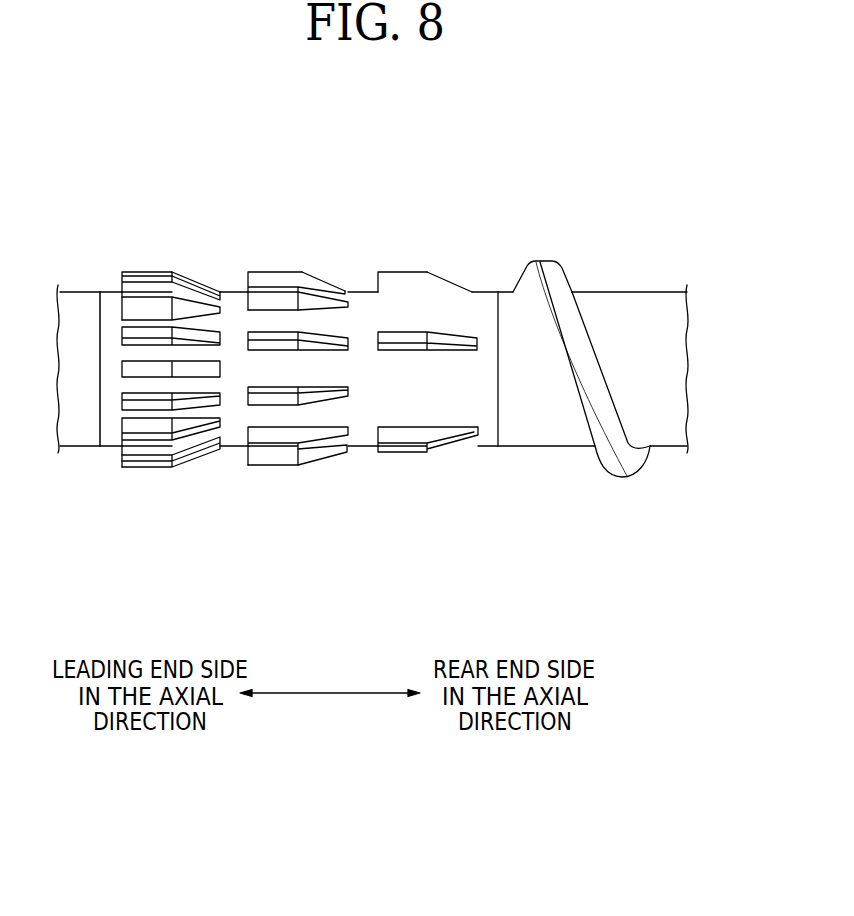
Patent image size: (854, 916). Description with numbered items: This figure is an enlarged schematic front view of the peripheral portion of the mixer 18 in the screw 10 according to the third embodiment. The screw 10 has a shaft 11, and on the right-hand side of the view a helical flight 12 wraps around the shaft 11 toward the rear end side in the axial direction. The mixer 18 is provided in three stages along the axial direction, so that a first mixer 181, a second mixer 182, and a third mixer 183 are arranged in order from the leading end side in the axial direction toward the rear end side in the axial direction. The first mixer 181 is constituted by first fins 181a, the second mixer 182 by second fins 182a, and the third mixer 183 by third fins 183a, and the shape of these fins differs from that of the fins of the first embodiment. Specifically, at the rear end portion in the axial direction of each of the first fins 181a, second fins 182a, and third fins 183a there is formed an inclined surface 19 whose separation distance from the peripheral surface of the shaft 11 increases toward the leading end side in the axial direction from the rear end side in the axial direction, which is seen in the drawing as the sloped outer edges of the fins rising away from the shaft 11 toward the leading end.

The screw 10 is at (183, 150).
The shaft 11 is at (623, 291).
The flight 12 is at (542, 260).
The mixer 18 is at (282, 393).
The first mixer 181 is at (151, 378).
The second mixer 182 is at (294, 378).
The third mixer 183 is at (423, 378).
The first fins 181a is at (152, 272).
The second fins 182a is at (280, 272).
The third fins 183a is at (407, 270).
The inclined surface 19 is at (188, 273).